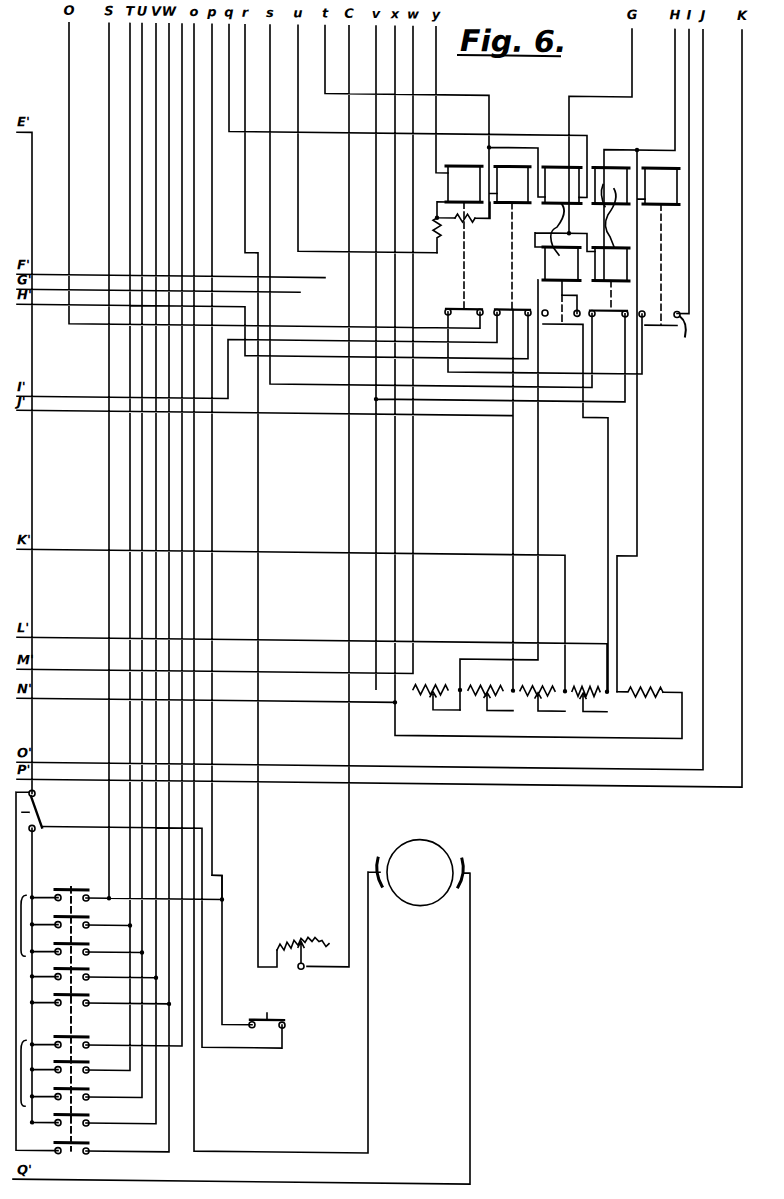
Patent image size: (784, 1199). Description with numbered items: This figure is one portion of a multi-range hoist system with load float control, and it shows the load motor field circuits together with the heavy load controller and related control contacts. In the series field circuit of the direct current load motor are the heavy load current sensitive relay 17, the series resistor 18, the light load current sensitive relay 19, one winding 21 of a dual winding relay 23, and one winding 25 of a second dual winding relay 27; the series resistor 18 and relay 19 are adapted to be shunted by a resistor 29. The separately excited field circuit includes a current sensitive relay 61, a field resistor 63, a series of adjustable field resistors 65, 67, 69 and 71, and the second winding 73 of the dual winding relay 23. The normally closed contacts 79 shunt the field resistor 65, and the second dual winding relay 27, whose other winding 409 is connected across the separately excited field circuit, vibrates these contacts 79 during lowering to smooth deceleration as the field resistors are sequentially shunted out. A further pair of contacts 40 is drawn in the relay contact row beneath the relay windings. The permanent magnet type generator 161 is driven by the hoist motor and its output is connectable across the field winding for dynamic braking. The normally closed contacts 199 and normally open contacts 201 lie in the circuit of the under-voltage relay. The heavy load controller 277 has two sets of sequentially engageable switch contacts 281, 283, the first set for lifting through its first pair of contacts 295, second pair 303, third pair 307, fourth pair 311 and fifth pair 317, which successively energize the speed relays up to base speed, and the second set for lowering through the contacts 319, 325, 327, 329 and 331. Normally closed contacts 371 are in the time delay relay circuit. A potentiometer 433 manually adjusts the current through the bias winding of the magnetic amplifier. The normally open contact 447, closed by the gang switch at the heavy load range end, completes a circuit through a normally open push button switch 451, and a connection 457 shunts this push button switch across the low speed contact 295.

The heavy load current sensitive relay 17 is at (474, 187).
The series resistor 18 is at (468, 218).
The light load current sensitive relay 19 is at (522, 187).
The winding of dual winding relay 21 is at (563, 169).
The dual winding relay 23 is at (553, 219).
The winding of second dual winding relay 25 is at (602, 218).
The second dual winding relay 27 is at (615, 226).
The resistor 29 is at (437, 245).
The contact 40 is at (545, 304).
The current sensitive relay 61 is at (670, 187).
The field resistor 63 is at (644, 696).
The adjustable field resistor 65 is at (426, 694).
The adjustable field resistor 67 is at (482, 702).
The adjustable field resistor 69 is at (534, 704).
The adjustable field resistor 71 is at (582, 704).
The second winding of dual winding relay 73 is at (545, 262).
The normally closed relay contacts 79 is at (614, 304).
The permanent magnet type generator 161 is at (432, 875).
The normally closed contacts 199 is at (448, 302).
The normally open contacts 201 is at (666, 334).
The controller 277 is at (85, 879).
The set of sequentially engageable switch contacts 281 is at (22, 958).
The set of sequentially engageable switch contacts 283 is at (22, 1102).
The first pair of contacts 295 is at (88, 900).
The second pair of contacts 303 is at (88, 927).
The third pair of contacts 307 is at (88, 954).
The fourth pair of contacts 311 is at (88, 979).
The fifth pair of contacts 317 is at (88, 1005).
The first pair of contacts of second set 319 is at (88, 1047).
The second pair of contacts of lowering set 325 is at (88, 1072).
The pair of contacts 327 is at (88, 1099).
The pair of contacts 329 is at (88, 1125).
The pair of contacts 331 is at (88, 1153).
The normally closed contacts 371 is at (503, 302).
The winding of relay 409 is at (620, 262).
The potentiometer 433 is at (300, 934).
The normally open contact 447 is at (44, 822).
The normally open push button switch 451 is at (284, 1017).
The connection 457 is at (212, 890).